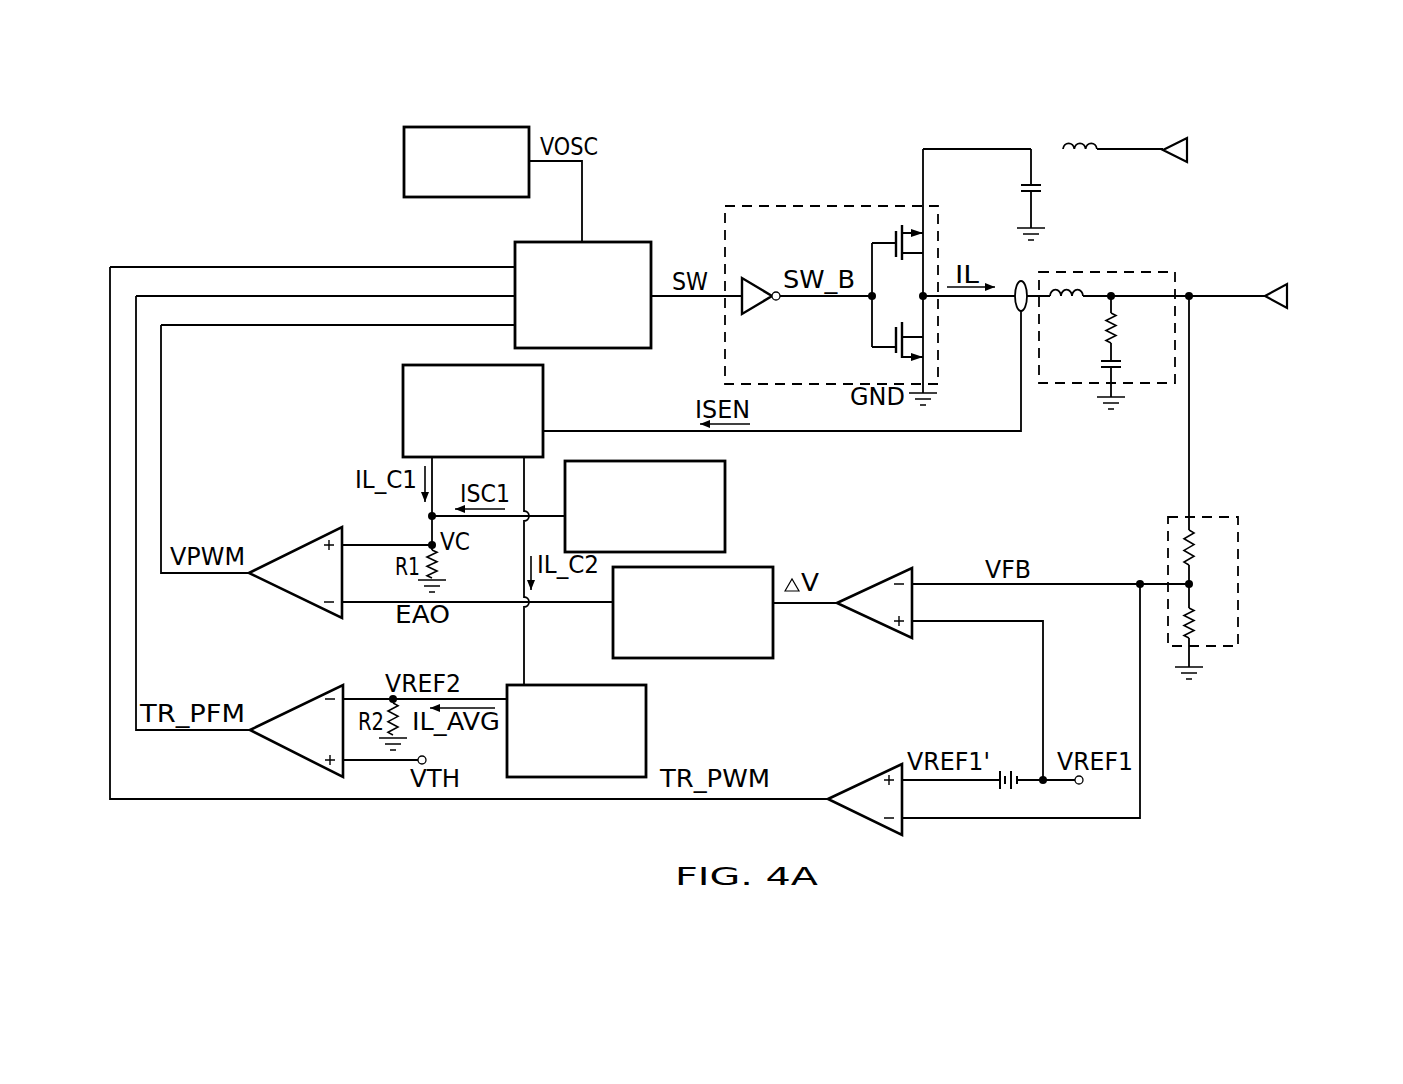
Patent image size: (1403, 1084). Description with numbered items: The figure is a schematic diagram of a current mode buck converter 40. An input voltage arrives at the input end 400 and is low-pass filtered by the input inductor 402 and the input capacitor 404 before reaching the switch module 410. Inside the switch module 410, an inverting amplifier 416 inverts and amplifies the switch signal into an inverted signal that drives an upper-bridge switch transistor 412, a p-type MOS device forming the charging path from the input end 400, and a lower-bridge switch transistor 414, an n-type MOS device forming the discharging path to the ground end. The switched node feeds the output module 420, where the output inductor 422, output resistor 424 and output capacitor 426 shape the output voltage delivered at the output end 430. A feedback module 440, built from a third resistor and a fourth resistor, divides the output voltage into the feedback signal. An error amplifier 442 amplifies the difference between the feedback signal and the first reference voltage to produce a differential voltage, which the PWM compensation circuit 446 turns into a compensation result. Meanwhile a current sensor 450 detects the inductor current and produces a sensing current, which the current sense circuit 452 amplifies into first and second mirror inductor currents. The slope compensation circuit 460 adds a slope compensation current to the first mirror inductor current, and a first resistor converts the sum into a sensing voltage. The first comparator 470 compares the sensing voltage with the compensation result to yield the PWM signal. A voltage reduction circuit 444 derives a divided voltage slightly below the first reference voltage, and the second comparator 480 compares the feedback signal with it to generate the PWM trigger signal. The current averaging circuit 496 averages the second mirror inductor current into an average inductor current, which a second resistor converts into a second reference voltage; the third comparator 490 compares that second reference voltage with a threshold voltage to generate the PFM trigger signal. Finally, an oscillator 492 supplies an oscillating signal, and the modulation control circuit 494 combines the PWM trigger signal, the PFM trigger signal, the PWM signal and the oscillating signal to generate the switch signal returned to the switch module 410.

The buck converter 40 is at (1288, 120).
The input end 400 is at (1172, 143).
The input inductor 402 is at (1080, 138).
The input capacitor 404 is at (1040, 182).
The switch module 410 is at (790, 206).
The upper-bridge switch transistor 412 is at (893, 236).
The lower-bridge switch transistor 414 is at (893, 357).
The inverting amplifier 416 is at (760, 320).
The output module 420 is at (1140, 272).
The output inductor 422 is at (1068, 310).
The output resistor 424 is at (1120, 318).
The output capacitor 426 is at (1120, 362).
The output end 430 is at (1272, 290).
The feedback module 440 is at (1220, 517).
The error amplifier 442 is at (876, 585).
The voltage reduction circuit 444 is at (1010, 770).
The PWM compensation circuit 446 is at (748, 566).
The current sensor 450 is at (1017, 292).
The current sense circuit 452 is at (426, 364).
The slope compensation circuit 460 is at (693, 461).
The first comparator 470 is at (296, 548).
The second comparator 480 is at (865, 780).
The third comparator 490 is at (296, 705).
The oscillator 492 is at (502, 126).
The modulation control circuit 494 is at (637, 241).
The current averaging circuit 496 is at (575, 684).